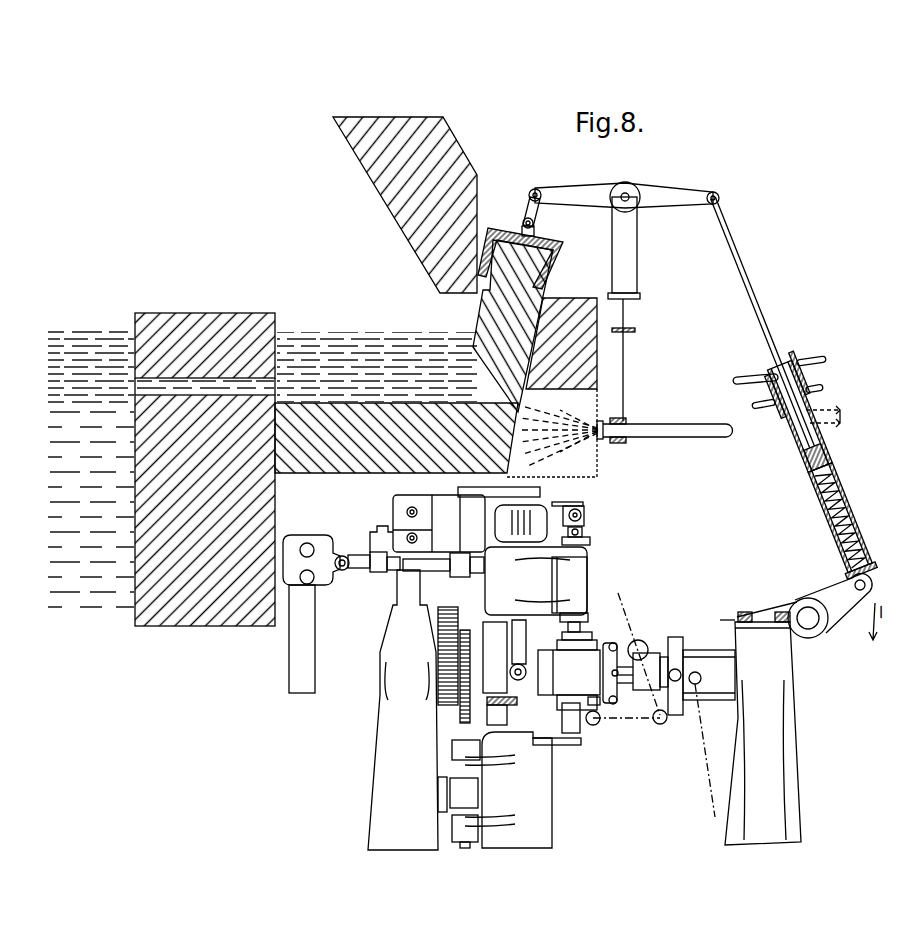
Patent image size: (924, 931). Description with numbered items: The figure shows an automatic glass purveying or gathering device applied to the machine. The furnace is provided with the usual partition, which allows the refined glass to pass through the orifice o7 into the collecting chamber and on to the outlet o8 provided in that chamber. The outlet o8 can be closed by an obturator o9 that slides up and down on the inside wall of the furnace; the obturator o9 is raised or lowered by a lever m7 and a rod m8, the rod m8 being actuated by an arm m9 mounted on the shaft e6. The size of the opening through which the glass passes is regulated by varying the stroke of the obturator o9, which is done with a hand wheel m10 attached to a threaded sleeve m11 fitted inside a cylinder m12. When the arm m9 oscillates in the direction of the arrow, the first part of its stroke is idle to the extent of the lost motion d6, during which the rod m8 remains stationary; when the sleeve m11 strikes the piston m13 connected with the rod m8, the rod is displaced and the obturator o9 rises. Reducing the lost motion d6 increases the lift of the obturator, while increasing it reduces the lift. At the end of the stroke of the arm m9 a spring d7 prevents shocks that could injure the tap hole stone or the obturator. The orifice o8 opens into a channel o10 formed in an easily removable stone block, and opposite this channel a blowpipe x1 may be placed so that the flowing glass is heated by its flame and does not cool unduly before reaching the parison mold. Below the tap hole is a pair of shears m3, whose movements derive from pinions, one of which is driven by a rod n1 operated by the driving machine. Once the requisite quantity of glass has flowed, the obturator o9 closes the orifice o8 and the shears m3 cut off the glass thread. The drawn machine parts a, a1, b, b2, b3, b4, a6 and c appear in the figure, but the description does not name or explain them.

The orifice o7 is at (193, 388).
The obturator o9 is at (482, 308).
The outlet o8 is at (578, 401).
The channel o10 is at (585, 458).
The blowpipe x1 is at (628, 424).
The lever m7 is at (667, 195).
The rod m8 is at (750, 296).
The hand wheel m10 is at (760, 378).
The threaded sleeve m11 is at (786, 414).
The piston m13 is at (812, 458).
The cylinder m12 is at (843, 512).
The lost motion d6 is at (832, 408).
The spring d7 is at (830, 525).
The arm m9 is at (837, 594).
The shaft e6 is at (811, 623).
The shears m3 is at (580, 506).
The head a is at (536, 560).
The slide a1 is at (585, 580).
The link b is at (513, 615).
The bearing block b2 is at (569, 661).
The connecting rod b4 is at (613, 643).
The cylinder a6 is at (675, 645).
The rod n1 is at (342, 572).
The lever b3 is at (538, 696).
The base body c is at (495, 790).